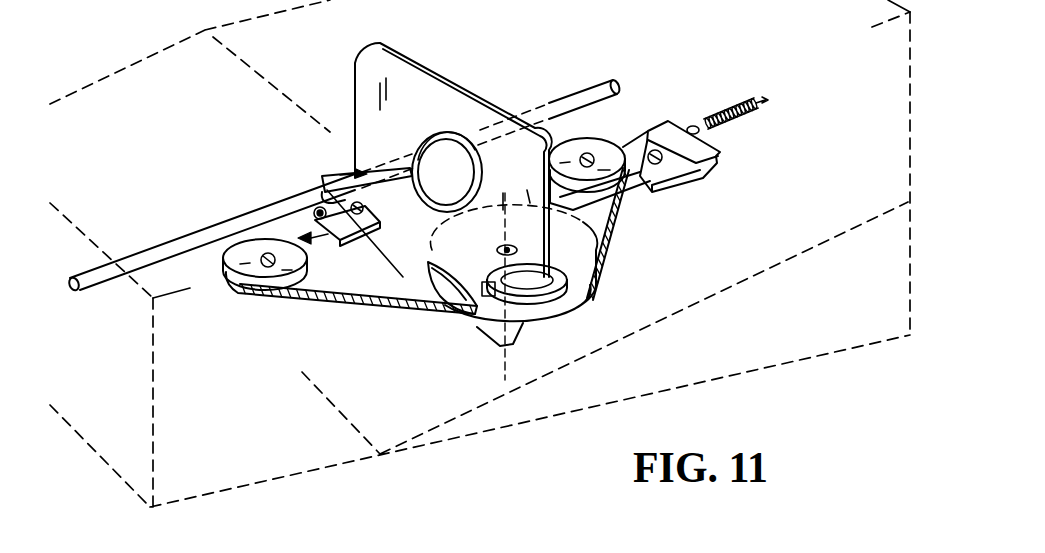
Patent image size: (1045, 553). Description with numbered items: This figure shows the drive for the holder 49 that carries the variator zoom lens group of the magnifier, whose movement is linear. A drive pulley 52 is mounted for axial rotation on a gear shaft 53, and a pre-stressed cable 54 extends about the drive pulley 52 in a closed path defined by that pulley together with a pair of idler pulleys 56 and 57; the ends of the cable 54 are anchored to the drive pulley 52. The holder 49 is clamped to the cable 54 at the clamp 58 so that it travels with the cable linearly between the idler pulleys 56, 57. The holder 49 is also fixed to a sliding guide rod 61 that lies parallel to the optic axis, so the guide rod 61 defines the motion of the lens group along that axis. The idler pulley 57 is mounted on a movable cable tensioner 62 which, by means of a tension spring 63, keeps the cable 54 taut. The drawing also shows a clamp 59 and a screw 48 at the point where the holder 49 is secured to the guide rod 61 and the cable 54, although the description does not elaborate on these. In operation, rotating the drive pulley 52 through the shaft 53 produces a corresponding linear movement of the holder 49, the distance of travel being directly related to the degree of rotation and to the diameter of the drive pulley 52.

The clamp screw 48 is at (318, 212).
The holder 49 is at (427, 110).
The drive pulley 52 is at (592, 298).
The gear shaft 53 is at (502, 248).
The pre-stressed cable 54 is at (612, 247).
The idler pulley 56 is at (261, 292).
The idler pulley 57 is at (578, 140).
The cable clamp 58 is at (363, 218).
The clamp 59 is at (337, 178).
The sliding guide rod 61 is at (186, 243).
The cable tensioner 62 is at (681, 118).
The tension spring 63 is at (740, 108).